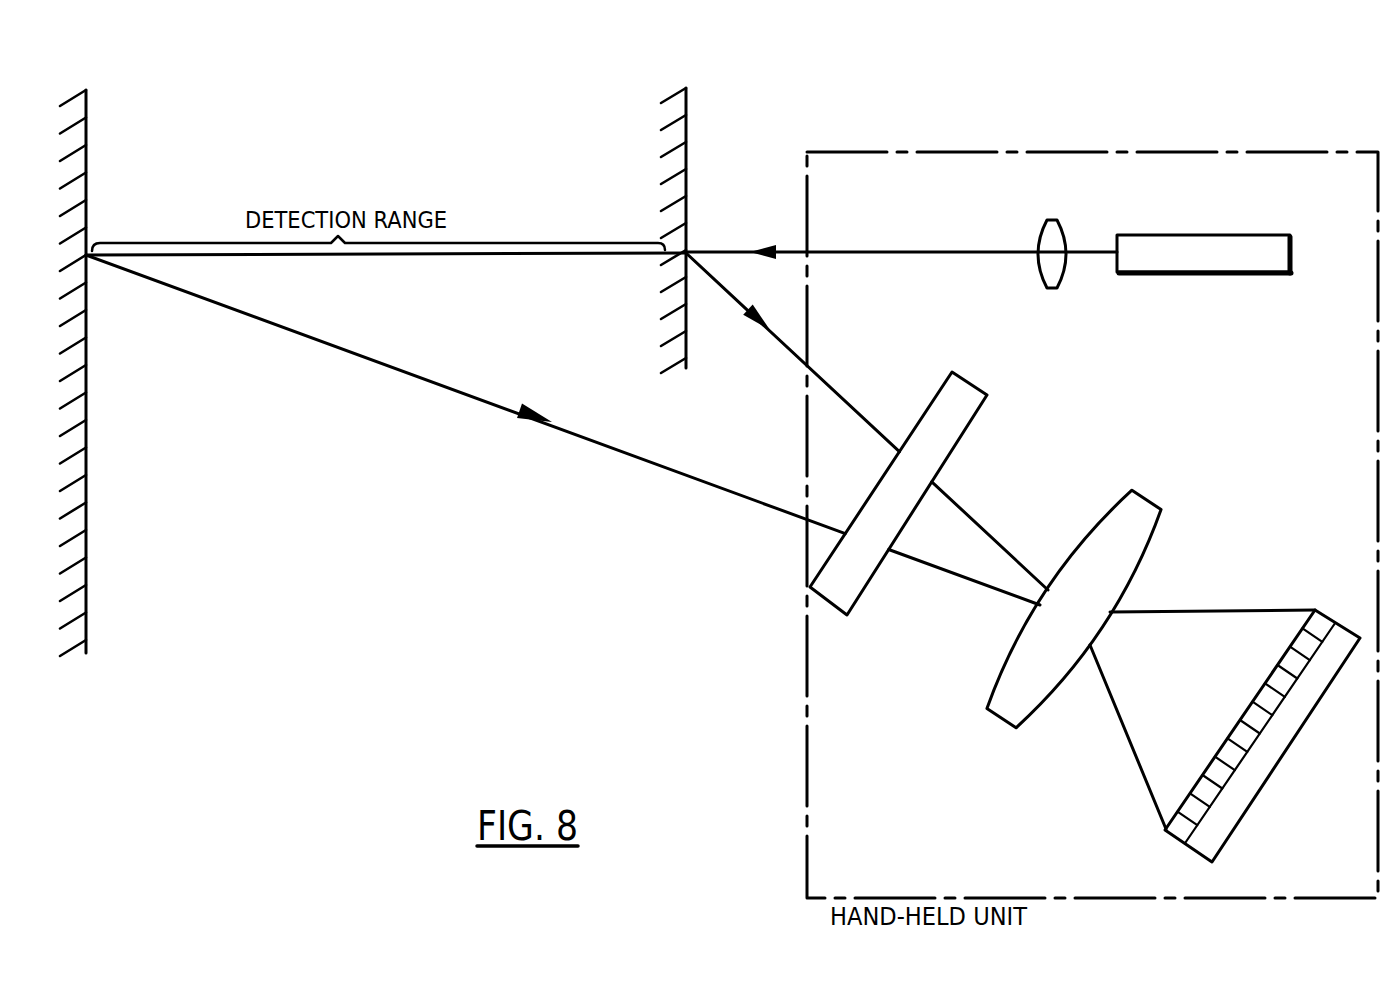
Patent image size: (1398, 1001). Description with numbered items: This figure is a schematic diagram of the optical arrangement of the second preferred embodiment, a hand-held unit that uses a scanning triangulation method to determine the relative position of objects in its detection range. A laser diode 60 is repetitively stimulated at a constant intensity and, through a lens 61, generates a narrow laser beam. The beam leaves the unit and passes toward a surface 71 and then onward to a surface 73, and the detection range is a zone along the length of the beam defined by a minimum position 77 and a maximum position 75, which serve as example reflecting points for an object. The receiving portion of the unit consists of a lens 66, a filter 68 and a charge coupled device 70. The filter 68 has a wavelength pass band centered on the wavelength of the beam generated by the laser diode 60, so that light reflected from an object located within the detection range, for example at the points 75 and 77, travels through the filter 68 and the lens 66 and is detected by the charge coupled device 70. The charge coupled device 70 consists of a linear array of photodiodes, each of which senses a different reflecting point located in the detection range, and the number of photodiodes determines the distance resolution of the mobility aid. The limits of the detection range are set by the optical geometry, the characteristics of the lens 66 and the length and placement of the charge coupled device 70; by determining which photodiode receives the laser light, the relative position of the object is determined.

The laser diode 60 is at (1207, 234).
The lens 61 is at (1037, 232).
The lens 66 is at (1118, 505).
The filter 68 is at (937, 384).
The charge coupled device (CCD) 70 is at (1312, 608).
The mirror / reflecting surface 71 is at (688, 86).
The target wall / object surface 73 is at (86, 89).
The maximum position 75 is at (90, 249).
The minimum position 77 is at (688, 251).